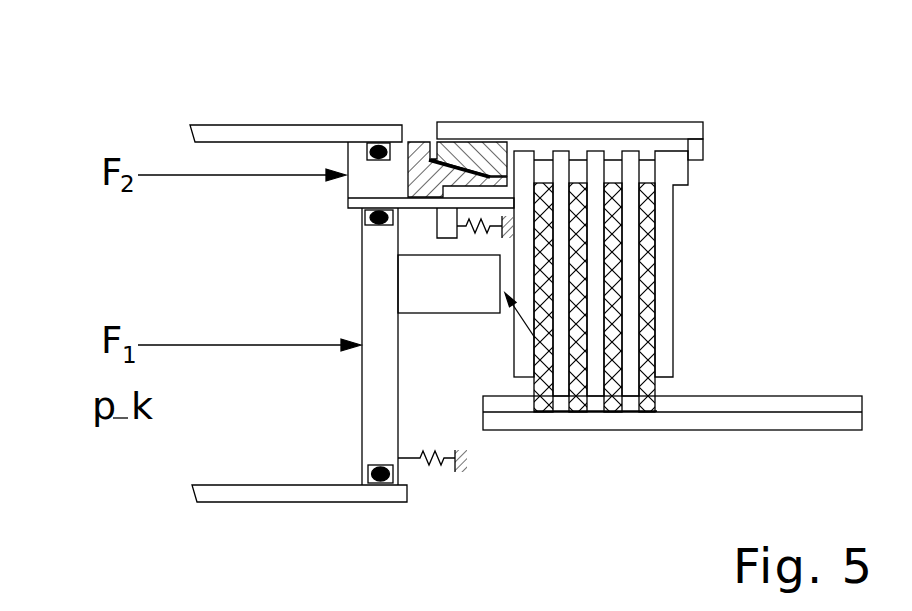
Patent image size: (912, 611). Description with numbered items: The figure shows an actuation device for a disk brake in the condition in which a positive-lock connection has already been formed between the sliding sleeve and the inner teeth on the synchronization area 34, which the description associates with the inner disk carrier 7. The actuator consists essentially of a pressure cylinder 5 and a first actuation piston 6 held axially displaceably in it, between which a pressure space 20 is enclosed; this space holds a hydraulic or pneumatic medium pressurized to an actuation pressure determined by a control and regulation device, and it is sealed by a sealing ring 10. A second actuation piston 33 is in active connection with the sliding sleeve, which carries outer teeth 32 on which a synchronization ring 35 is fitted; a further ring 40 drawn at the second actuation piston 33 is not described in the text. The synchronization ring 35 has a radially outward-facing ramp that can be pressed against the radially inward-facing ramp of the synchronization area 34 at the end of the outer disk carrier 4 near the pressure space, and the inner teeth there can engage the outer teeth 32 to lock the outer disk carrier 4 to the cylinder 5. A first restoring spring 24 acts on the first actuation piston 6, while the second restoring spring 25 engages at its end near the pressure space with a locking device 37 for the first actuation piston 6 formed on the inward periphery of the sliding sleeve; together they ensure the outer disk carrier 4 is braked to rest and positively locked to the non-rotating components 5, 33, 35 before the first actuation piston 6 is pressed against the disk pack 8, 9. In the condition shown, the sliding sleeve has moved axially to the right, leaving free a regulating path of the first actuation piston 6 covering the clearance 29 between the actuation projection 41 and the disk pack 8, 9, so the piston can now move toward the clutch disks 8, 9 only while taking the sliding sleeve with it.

The outer disk carrier 4 is at (663, 133).
The pressure cylinder 5 is at (227, 495).
The first actuation piston 6 is at (382, 327).
The inner disk carrier 7 is at (752, 403).
The disk pack 8 is at (663, 313).
The disk pack 9 is at (657, 253).
The sealing ring 10 is at (387, 490).
The pressure space 20 is at (227, 447).
The first restoring spring 24 is at (427, 465).
The second restoring spring 25 is at (495, 222).
The clearance 29 is at (557, 375).
The outer teeth 32 is at (408, 217).
The second actuation piston 33 is at (362, 160).
The synchronization area 34 is at (487, 170).
The synchronization ring 35 is at (420, 143).
The locking device 37 is at (445, 208).
The upper seal ring 40 is at (385, 143).
The actuation projection 41 is at (465, 285).